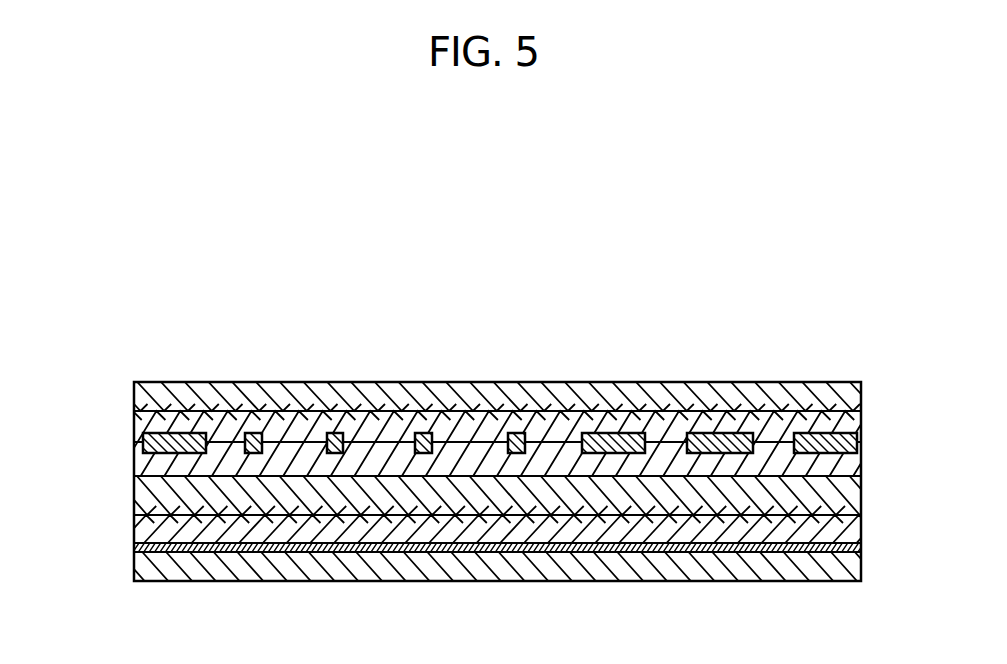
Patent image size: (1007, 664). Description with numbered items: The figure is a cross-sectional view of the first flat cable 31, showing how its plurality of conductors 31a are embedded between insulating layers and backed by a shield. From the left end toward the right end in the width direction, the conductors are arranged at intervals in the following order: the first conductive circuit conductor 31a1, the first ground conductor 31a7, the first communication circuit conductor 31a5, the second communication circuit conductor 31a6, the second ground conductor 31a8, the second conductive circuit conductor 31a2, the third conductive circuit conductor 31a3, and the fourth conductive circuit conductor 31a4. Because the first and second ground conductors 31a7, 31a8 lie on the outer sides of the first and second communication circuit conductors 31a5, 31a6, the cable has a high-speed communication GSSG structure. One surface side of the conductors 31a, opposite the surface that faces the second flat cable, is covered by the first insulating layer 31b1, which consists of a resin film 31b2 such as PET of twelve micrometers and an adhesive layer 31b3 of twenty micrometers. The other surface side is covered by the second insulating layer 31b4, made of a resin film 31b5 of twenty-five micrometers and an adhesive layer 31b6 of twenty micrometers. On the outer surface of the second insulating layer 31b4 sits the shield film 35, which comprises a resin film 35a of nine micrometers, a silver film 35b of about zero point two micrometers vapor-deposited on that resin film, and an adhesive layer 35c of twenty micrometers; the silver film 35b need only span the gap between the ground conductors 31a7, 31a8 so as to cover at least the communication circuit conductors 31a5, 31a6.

The first flat cable 31 is at (750, 223).
The conductors 31a is at (499, 381).
The first conductive circuit conductor 31a1 is at (177, 433).
The second conductive circuit conductor 31a2 is at (614, 433).
The third conductive circuit conductor 31a3 is at (721, 433).
The fourth conductive circuit conductor 31a4 is at (826, 433).
The first communication circuit conductor 31a5 is at (335, 433).
The second communication circuit conductor 31a6 is at (424, 433).
The first ground conductor 31a7 is at (253, 433).
The second ground conductor 31a8 is at (517, 433).
The first insulating layer 31b1 is at (870, 385).
The resin film 31b2 is at (134, 392).
The adhesive layer 31b3 is at (134, 422).
The second insulating layer 31b4 is at (870, 443).
The resin film 31b5 is at (134, 490).
The adhesive layer 31b6 is at (134, 453).
The shield film 35 is at (870, 515).
The resin film 35a is at (134, 571).
The silver film 35b is at (134, 547).
The adhesive layer 35c is at (134, 524).